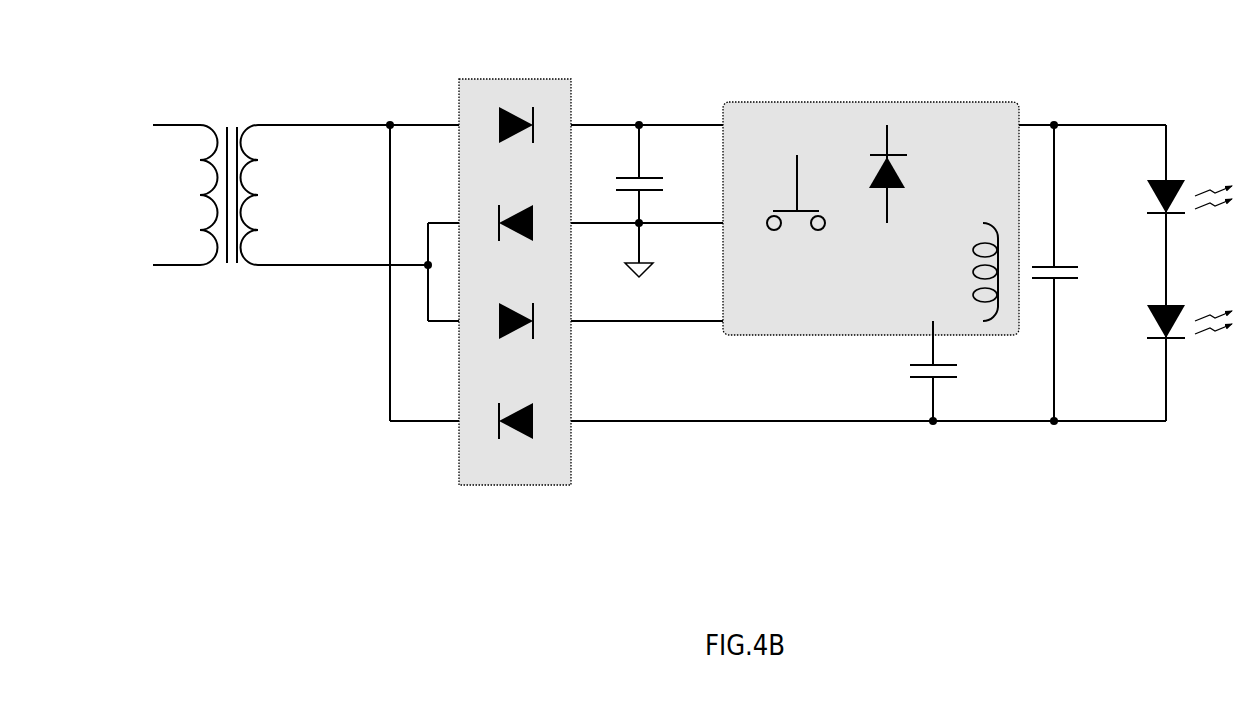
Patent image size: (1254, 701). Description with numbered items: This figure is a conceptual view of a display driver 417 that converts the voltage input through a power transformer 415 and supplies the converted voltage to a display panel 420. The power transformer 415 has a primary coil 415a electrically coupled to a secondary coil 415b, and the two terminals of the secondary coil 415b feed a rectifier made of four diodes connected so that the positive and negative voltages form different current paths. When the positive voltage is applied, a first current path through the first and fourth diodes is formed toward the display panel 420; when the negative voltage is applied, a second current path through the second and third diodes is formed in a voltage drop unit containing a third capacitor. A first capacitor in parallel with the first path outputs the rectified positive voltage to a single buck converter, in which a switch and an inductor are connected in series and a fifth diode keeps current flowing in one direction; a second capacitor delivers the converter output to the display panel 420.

The power transformer 415 is at (290, 209).
The primary coil 415a is at (176, 122).
The secondary coil 415b is at (307, 122).
The display driver 417 is at (760, 273).
The display panel 420 is at (1174, 94).